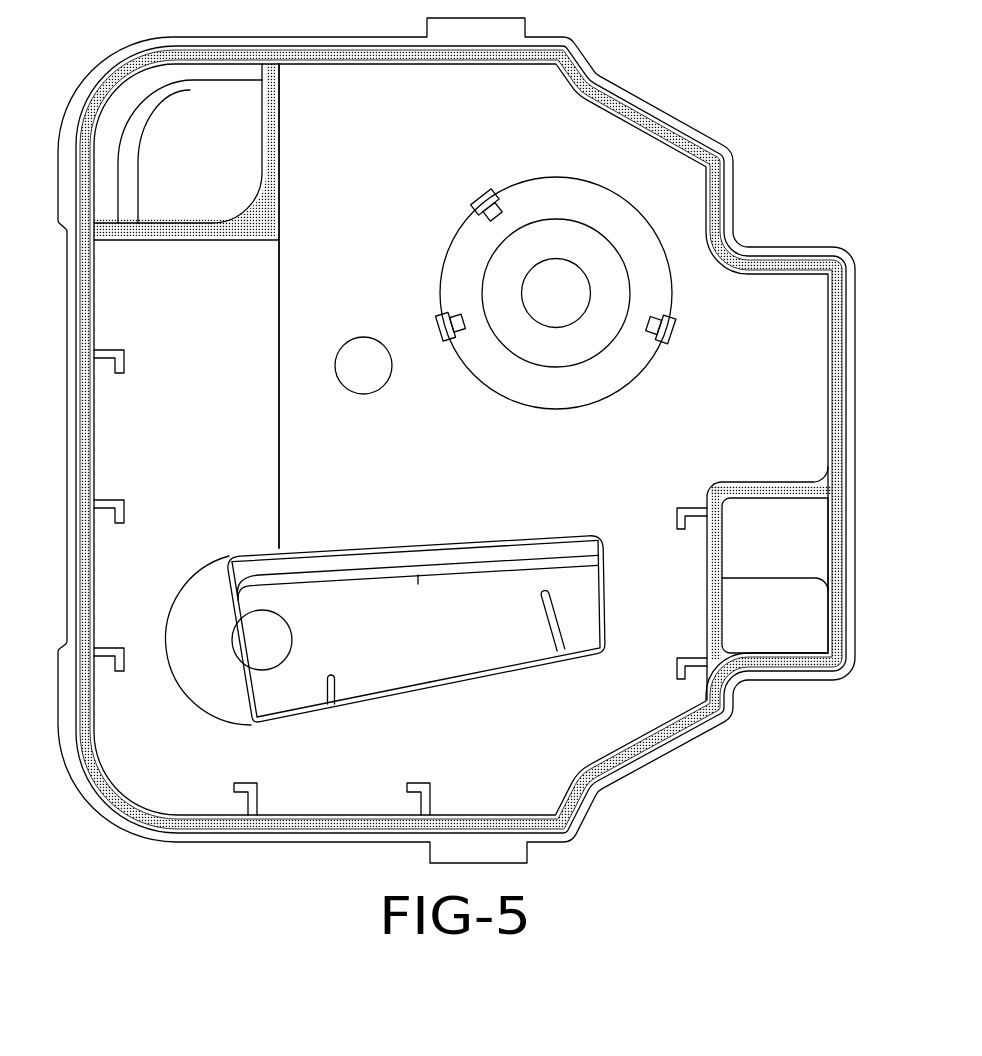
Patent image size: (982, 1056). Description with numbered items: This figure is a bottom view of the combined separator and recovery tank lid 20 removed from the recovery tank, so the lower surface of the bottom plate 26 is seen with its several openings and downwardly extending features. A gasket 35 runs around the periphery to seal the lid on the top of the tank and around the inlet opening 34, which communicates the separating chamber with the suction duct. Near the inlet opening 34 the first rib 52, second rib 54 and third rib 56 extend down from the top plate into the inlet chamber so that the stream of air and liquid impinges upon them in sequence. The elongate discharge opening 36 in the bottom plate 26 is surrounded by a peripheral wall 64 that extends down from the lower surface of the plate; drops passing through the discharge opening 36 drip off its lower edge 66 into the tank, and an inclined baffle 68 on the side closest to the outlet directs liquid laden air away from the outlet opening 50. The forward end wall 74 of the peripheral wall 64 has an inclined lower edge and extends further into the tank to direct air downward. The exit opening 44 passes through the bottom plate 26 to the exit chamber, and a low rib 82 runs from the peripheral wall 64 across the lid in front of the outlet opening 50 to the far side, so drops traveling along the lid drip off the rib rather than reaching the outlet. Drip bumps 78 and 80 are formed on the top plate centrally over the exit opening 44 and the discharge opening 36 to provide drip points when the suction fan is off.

The combined separator and recovery tank lid 20 is at (679, 77).
The gasket 35 is at (715, 208).
The outlet opening 50 is at (218, 133).
The low rib 82 is at (272, 376).
The bottom plate 26 is at (385, 478).
The exit opening 44 is at (600, 332).
The drip bump 80 is at (548, 287).
The inlet opening 34 is at (757, 536).
The elongate discharge opening 36 is at (438, 656).
The inclined baffle 68 is at (430, 552).
The lower edge of the peripheral wall 66 is at (523, 667).
The peripheral wall 64 is at (365, 706).
The forward end wall 74 is at (243, 697).
The drip bump 78 is at (258, 634).
The third rib 56 is at (338, 684).
The first rib 52 is at (548, 620).
The second rib 54 is at (418, 586).